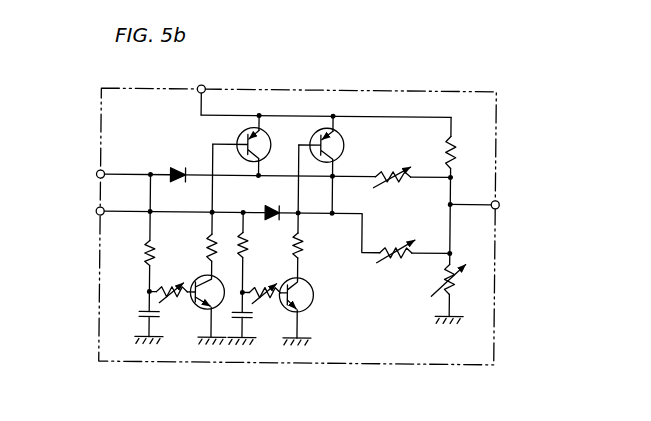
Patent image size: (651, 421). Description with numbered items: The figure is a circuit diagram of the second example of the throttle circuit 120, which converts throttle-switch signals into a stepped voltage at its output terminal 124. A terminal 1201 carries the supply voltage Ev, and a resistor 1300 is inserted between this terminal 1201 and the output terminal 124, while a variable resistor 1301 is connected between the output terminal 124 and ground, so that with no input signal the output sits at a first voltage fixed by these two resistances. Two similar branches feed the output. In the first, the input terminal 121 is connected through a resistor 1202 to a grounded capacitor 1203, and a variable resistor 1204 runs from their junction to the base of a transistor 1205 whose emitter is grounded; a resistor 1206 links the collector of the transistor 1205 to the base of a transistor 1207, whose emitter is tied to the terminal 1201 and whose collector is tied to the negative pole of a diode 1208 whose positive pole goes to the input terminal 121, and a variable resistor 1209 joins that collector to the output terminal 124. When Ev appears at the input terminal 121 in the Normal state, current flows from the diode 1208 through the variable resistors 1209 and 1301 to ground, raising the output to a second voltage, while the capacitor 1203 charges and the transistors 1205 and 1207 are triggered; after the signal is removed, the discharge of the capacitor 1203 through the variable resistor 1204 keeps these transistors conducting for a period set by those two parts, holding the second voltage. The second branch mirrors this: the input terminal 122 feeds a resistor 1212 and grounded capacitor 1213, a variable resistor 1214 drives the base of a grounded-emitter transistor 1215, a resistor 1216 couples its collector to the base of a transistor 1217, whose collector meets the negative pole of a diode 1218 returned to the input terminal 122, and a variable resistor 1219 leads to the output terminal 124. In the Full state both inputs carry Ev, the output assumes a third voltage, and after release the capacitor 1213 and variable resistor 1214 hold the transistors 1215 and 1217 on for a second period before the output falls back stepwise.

The throttle circuit 120 is at (394, 90).
The input terminal 121 is at (80, 172).
The input terminal 122 is at (80, 209).
The output terminal 124 is at (518, 206).
The terminal 1201 is at (204, 88).
The resistor 1202 is at (143, 256).
The capacitor 1203 is at (131, 319).
The variable resistor 1204 is at (148, 293).
The transistor 1205 is at (190, 315).
The resistor 1206 is at (208, 248).
The transistor 1207 is at (238, 141).
The diode 1208 is at (175, 170).
The variable resistor 1209 is at (378, 168).
The resistor 1212 is at (248, 238).
The capacitor 1213 is at (251, 316).
The variable resistor 1214 is at (263, 300).
The transistor 1215 is at (315, 298).
The resistor 1216 is at (307, 250).
The transistor 1217 is at (344, 129).
The diode 1218 is at (270, 205).
The variable resistor 1219 is at (384, 246).
The resistor 1300 is at (452, 134).
The variable resistor 1301 is at (457, 283).